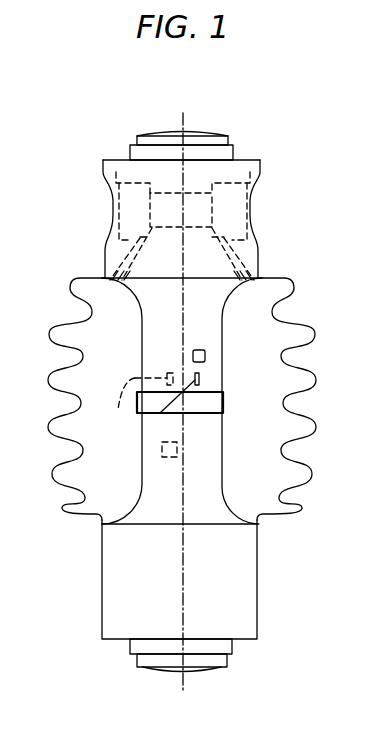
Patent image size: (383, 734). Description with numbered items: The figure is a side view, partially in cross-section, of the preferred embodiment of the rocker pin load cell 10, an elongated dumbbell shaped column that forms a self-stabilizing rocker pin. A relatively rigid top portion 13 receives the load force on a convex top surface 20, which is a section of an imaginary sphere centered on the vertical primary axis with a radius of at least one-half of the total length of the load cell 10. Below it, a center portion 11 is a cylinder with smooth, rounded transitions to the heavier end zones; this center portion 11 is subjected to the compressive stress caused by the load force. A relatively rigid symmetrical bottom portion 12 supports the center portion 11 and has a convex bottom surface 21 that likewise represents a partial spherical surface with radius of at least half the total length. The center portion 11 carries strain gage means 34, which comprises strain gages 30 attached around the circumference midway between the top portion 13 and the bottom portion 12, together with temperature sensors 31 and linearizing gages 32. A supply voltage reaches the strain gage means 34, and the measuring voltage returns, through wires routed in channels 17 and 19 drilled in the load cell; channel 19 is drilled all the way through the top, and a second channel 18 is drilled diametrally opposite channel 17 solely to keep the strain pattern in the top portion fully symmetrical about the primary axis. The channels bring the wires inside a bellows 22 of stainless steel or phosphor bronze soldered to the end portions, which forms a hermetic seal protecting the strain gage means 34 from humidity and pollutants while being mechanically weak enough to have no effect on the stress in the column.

The load cell 10 is at (322, 208).
The center portion 11 is at (205, 323).
The bottom portion 12 is at (245, 608).
The top portion 13 is at (105, 254).
The channel 17 is at (140, 262).
The second channel 18 is at (232, 263).
The channel 19 is at (233, 207).
The convex top surface 20 is at (202, 132).
The convex bottom surface 21 is at (195, 672).
The bellows 22 is at (316, 375).
The strain gages 30 is at (215, 402).
The temperature sensors 31 is at (205, 355).
The linearizing gages 32 is at (160, 413).
The strain gage means 34 is at (105, 368).